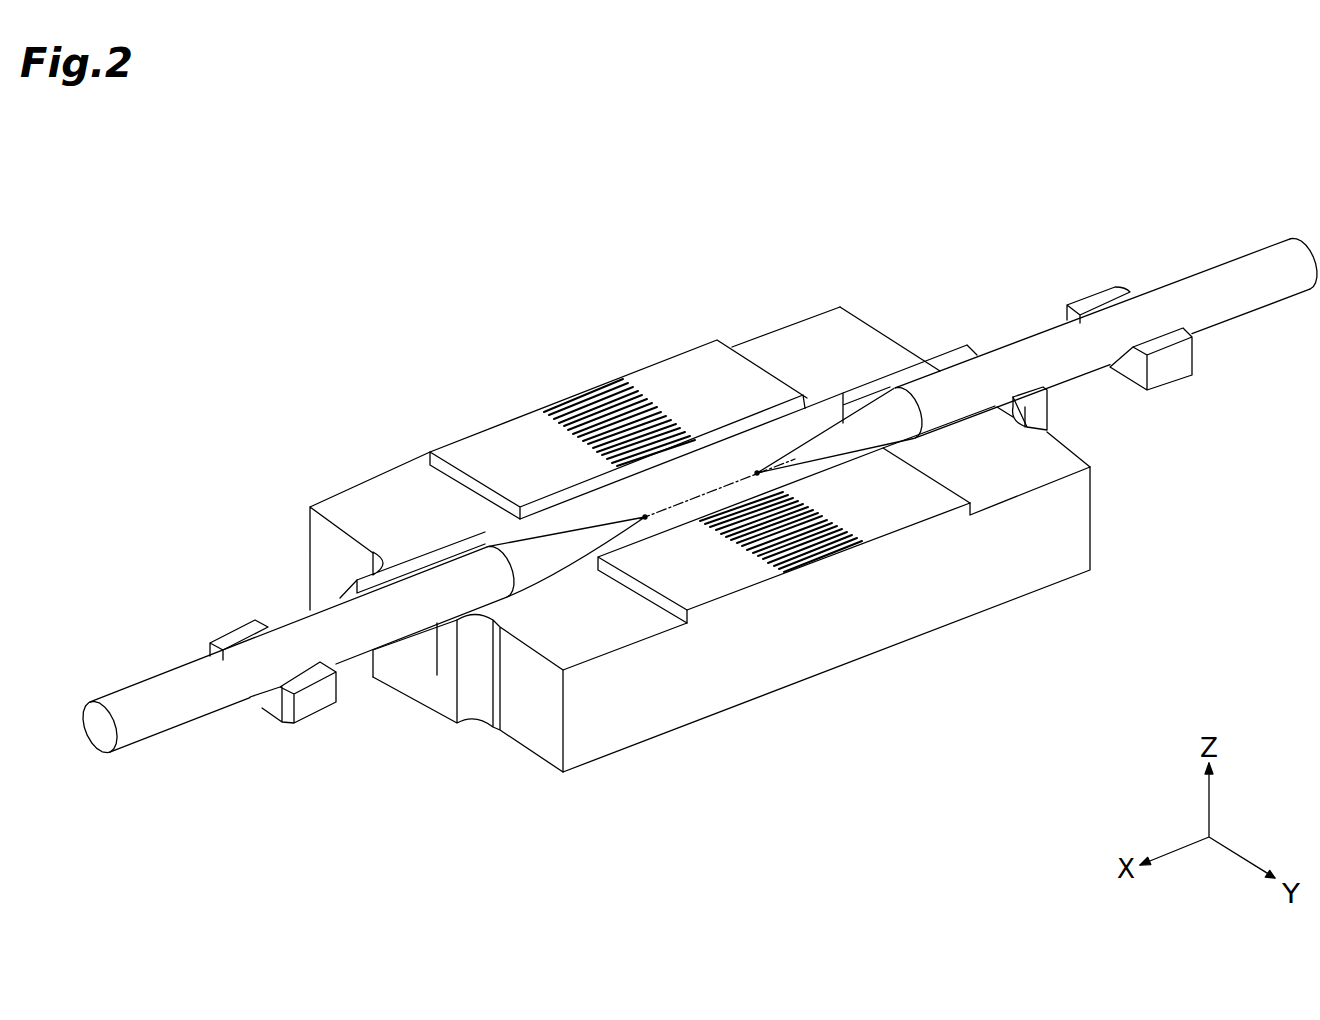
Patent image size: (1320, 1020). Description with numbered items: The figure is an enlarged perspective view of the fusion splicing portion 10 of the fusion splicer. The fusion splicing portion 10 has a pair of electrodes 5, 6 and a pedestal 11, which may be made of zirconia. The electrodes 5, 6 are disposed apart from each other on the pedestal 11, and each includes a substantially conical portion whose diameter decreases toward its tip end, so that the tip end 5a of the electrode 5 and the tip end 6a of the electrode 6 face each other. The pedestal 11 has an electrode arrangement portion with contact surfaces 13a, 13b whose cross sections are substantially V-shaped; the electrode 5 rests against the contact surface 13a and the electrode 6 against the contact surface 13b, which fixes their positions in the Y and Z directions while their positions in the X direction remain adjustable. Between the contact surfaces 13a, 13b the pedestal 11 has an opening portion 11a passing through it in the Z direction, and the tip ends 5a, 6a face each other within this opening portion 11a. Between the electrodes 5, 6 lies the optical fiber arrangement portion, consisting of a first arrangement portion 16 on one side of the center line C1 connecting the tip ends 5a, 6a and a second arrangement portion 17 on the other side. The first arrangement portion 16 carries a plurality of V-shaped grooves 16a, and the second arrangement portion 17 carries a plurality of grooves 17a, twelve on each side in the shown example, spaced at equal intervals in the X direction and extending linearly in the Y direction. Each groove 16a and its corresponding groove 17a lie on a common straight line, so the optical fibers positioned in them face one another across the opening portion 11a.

The electrode 5 is at (365, 667).
The tip end 5a is at (645, 520).
The electrode 6 is at (1036, 356).
The tip end 6a is at (757, 473).
The fusion splicing portion 10 is at (1022, 250).
The pedestal 11 is at (738, 522).
The opening portion 11a is at (745, 450).
The contact surface 13a is at (410, 568).
The contact surface 13b is at (934, 372).
The first arrangement portion 16 is at (618, 396).
The grooves 16a is at (582, 392).
The second arrangement portion 17 is at (882, 588).
The grooves 17a is at (837, 520).
The center line C1 is at (669, 508).